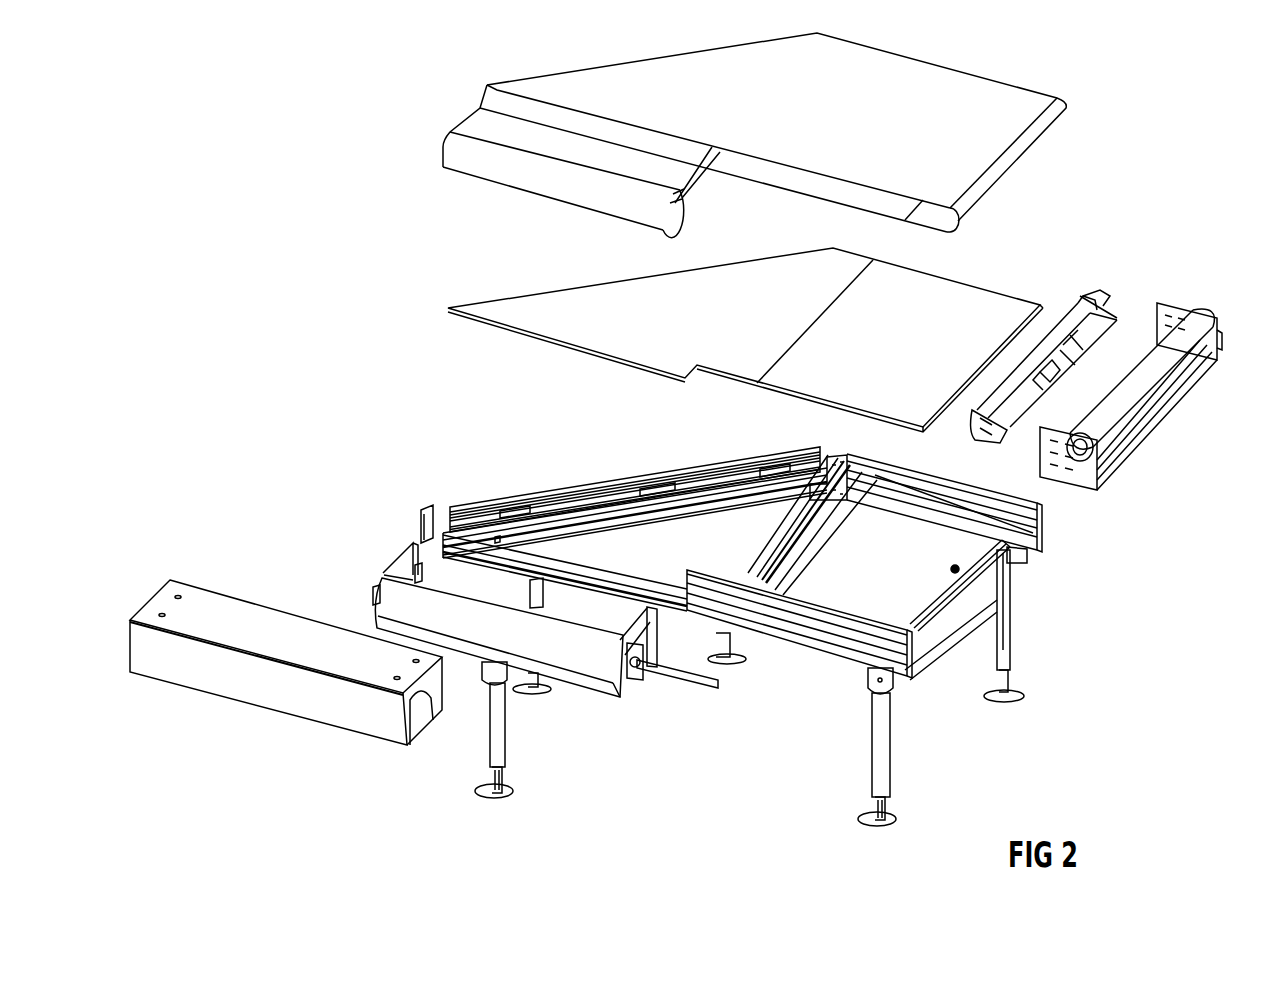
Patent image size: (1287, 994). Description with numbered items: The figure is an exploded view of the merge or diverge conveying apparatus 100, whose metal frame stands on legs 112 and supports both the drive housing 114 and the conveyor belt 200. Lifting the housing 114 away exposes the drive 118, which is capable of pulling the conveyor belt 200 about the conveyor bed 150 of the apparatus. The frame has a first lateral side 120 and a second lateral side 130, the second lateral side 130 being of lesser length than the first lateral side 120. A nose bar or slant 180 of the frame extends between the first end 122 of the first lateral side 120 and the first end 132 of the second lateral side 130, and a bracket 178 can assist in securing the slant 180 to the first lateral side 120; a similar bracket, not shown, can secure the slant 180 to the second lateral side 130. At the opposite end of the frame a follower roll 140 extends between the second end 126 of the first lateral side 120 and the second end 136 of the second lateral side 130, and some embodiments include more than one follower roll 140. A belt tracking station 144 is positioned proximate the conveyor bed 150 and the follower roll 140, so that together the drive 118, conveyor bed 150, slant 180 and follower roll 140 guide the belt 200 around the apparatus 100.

The conveyor belt 200 is at (953, 92).
The conveyor bed 150 is at (570, 318).
The belt tracking station 144 is at (1088, 315).
The follower roll 140 is at (1192, 327).
The nose bar or slant 180 is at (610, 480).
The first end of second lateral side 132 is at (832, 452).
The first end of first lateral side 122 is at (497, 535).
The bracket 178 is at (427, 508).
The drive 118 is at (418, 602).
The drive housing 114 is at (258, 628).
The second lateral side 130 is at (1037, 500).
The second end of second lateral side 136 is at (1040, 542).
The legs 112 is at (502, 740).
The first lateral side 120 is at (710, 593).
The merge or diverge conveying apparatus 100 is at (803, 657).
The second end of first lateral side 126 is at (868, 693).